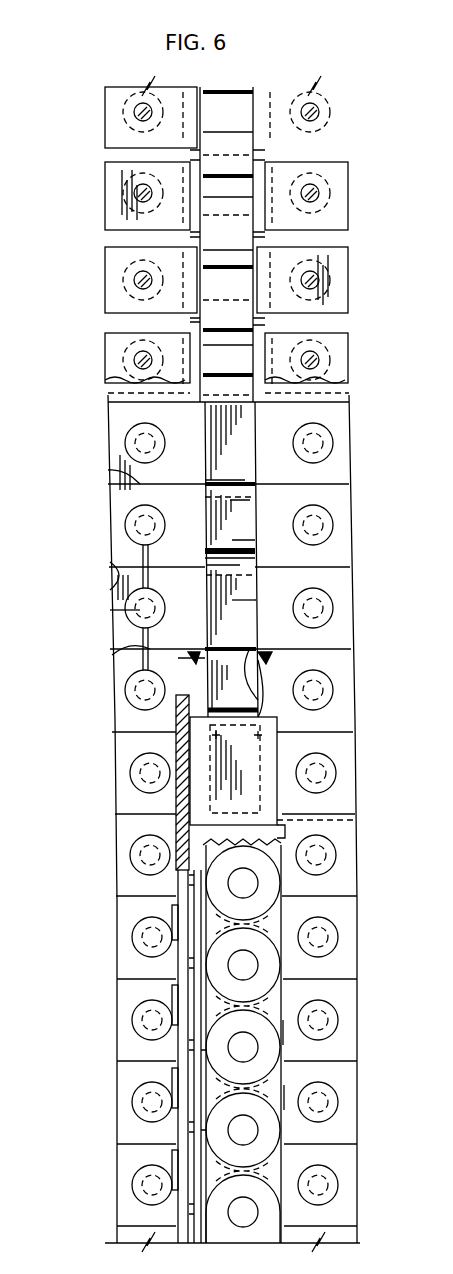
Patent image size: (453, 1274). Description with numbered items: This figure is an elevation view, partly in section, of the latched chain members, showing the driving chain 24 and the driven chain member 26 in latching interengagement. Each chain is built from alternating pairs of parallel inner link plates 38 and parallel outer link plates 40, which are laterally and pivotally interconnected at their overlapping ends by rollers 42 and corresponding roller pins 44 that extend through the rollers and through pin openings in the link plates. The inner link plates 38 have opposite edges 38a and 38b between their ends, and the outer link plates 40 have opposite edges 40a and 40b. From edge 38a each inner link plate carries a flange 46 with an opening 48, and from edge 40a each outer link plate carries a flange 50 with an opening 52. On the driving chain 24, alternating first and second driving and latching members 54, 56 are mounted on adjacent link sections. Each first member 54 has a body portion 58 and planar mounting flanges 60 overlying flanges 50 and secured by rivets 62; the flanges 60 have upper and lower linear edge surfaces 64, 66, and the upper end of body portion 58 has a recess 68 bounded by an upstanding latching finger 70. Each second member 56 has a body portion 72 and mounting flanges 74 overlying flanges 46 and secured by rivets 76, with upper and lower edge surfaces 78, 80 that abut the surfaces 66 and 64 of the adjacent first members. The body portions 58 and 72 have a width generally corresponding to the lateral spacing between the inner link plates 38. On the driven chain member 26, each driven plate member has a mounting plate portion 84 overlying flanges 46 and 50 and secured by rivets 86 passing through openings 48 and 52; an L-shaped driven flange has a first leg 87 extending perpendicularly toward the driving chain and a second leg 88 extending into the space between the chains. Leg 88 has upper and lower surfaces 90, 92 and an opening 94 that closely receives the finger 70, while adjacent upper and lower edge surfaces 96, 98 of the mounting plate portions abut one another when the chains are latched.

The driving chain 24 is at (343, 413).
The driven chain member 26 is at (286, 885).
The inner link plates 38 is at (160, 341).
The edge of inner link plate 38a is at (180, 322).
The edge of inner link plate 38b is at (283, 1033).
The outer link plates 40 is at (180, 134).
The edge of outer link plate 40a is at (185, 238).
The edge of outer link plate 40b is at (290, 1098).
The rollers 42 is at (224, 135).
The roller pins 44 is at (277, 152).
The flange 46 is at (115, 263).
The opening 48 is at (135, 284).
The flange 50 is at (110, 175).
The opening 52 is at (140, 193).
The first driving and latching member 54 is at (348, 547).
The second driving and latching member 56 is at (348, 613).
The body portion 58 is at (243, 527).
The mounting flanges 60 is at (120, 502).
The rivets 62 is at (133, 527).
The upper linear edge surface 64 is at (142, 484).
The lower linear edge surface 66 is at (125, 570).
The recess 68 is at (210, 473).
The latching finger 70 is at (245, 478).
The body portion 72 is at (245, 600).
The mounting flanges 74 is at (120, 607).
The rivets 76 is at (157, 607).
The upper linear edge surface 78 is at (122, 583).
The lower linear edge surface 80 is at (130, 650).
The mounting plate portion 84 is at (177, 823).
The rivets 86 is at (173, 908).
The first leg 87 is at (250, 750).
The second leg 88 is at (272, 657).
The upper surface 90 is at (187, 652).
The lower surface 92 is at (190, 662).
The opening 94 is at (273, 688).
The upper linear edge surface 96 is at (180, 865).
The lower linear edge surface 98 is at (187, 1057).